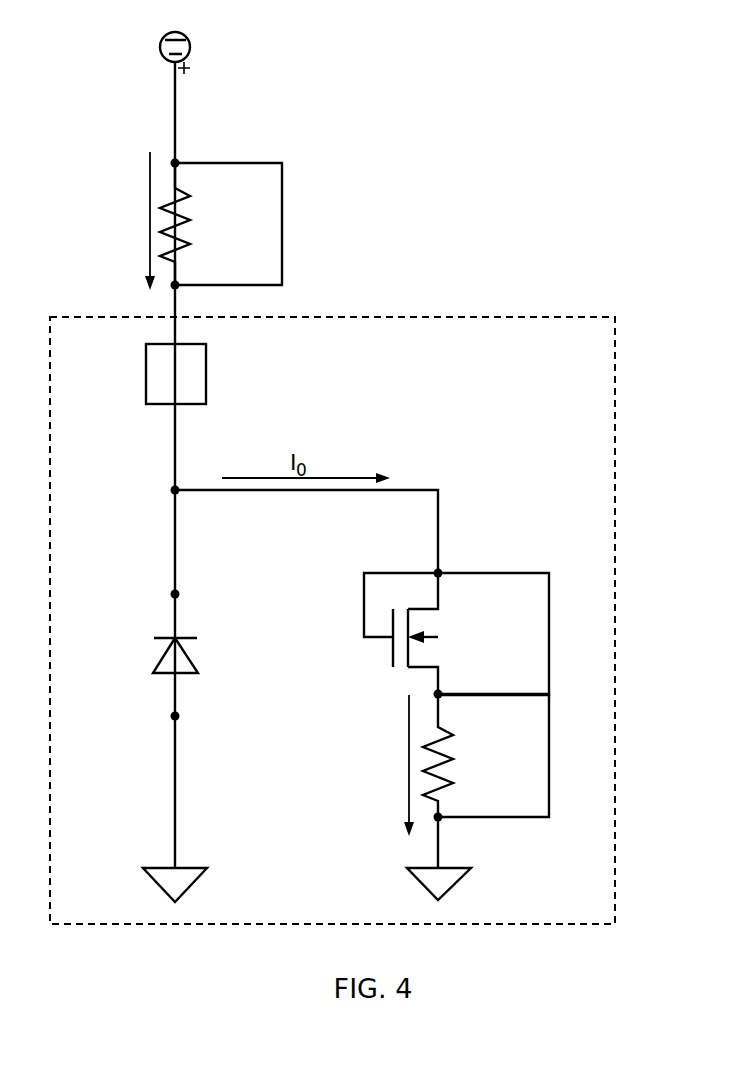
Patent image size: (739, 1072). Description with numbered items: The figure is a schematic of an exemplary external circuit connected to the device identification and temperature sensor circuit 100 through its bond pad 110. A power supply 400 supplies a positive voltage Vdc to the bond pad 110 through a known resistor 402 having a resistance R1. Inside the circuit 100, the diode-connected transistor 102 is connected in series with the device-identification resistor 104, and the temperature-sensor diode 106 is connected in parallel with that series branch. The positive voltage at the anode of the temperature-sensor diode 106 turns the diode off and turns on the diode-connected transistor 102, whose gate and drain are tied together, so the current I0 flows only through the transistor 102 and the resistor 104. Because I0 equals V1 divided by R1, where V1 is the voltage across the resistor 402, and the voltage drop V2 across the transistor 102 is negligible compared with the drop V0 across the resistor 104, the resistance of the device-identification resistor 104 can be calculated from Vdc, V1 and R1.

The power supply 400 is at (190, 47).
The resistor 402 is at (212, 218).
The device identification and temperature sensor circuit 100 is at (615, 600).
The bond pad 110 is at (146, 374).
The diode-connected transistor 102 is at (452, 624).
The resistor 104 is at (466, 754).
The temperature-sensor diode 106 is at (160, 660).